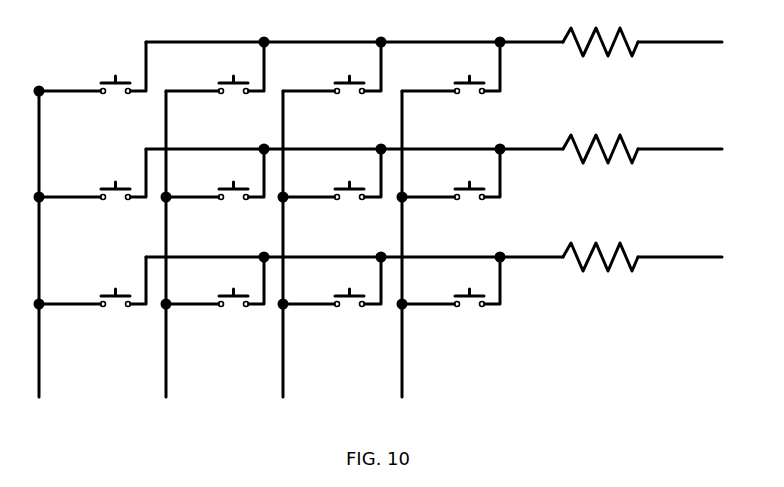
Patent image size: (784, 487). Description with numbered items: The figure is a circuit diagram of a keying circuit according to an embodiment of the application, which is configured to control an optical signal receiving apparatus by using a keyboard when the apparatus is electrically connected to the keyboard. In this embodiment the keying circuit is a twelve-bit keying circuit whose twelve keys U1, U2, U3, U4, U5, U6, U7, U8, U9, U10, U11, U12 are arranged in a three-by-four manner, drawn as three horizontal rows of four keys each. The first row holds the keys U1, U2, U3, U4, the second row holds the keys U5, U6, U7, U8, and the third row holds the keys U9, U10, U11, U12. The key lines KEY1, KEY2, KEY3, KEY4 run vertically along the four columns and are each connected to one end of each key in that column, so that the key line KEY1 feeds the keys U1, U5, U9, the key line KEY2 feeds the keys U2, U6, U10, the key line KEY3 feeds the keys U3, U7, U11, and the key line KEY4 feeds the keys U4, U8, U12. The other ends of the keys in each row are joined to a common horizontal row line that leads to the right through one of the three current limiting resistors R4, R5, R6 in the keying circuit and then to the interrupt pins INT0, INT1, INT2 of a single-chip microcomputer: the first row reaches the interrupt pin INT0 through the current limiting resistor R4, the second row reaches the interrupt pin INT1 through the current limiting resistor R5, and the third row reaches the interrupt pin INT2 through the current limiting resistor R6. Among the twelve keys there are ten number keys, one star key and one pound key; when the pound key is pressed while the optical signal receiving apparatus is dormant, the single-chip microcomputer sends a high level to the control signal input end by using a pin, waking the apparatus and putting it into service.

The key U1 is at (92, 82).
The key U2 is at (215, 82).
The key U3 is at (332, 82).
The key U4 is at (451, 82).
The key U5 is at (92, 188).
The key U6 is at (215, 188).
The key U7 is at (332, 188).
The key U8 is at (451, 188).
The key U9 is at (92, 296).
The key U10 is at (215, 296).
The key U11 is at (332, 296).
The key U12 is at (451, 296).
The current limiting resistor R4 is at (600, 57).
The current limiting resistor R5 is at (600, 159).
The current limiting resistor R6 is at (600, 269).
The key line KEY1 is at (52, 245).
The key line KEY2 is at (179, 247).
The key line KEY3 is at (296, 247).
The key line KEY4 is at (415, 247).
The interrupt pin INT0 is at (434, 29).
The interrupt pin INT1 is at (434, 136).
The interrupt pin INT2 is at (434, 244).